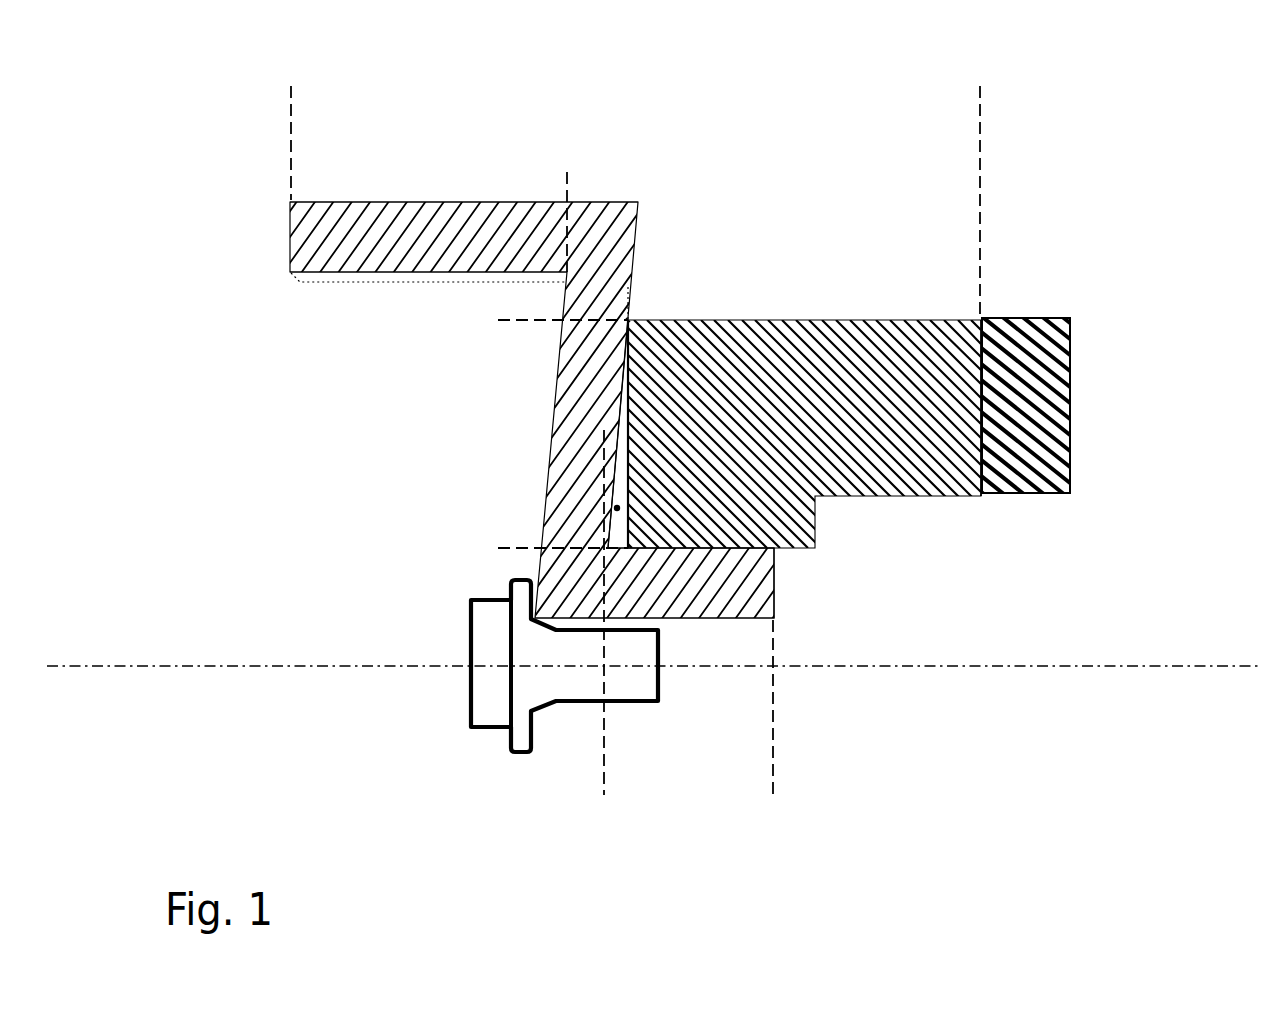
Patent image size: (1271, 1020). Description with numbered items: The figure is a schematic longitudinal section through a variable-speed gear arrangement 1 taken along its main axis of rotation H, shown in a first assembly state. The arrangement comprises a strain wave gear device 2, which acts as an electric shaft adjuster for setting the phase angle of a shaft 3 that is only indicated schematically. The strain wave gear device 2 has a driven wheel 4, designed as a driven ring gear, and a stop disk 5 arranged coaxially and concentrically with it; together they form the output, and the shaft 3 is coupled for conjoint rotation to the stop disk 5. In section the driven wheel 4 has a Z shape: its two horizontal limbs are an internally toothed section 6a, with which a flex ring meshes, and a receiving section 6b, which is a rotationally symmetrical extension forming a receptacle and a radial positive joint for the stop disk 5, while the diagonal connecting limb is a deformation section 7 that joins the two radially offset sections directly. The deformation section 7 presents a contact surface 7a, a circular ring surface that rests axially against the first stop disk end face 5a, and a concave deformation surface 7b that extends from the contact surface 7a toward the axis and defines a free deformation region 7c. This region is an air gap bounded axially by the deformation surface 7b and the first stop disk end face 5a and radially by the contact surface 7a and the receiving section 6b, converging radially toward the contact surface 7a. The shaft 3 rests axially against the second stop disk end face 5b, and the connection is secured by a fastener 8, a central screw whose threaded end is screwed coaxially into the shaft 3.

The variable-speed gear arrangement 1 is at (1105, 117).
The strain wave gear device 2 is at (980, 86).
The shaft 3 is at (1043, 318).
The driven wheel 4 is at (689, 178).
The stop disk 5 is at (795, 320).
The first stop disk end face 5a is at (628, 410).
The second stop disk end face 5b is at (980, 383).
The internally toothed section 6a is at (567, 172).
The receiving section 6b is at (773, 787).
The deformation section 7 is at (498, 320).
The contact surface 7a is at (628, 320).
The deformation surface 7b is at (612, 435).
The free deformation region 7c is at (617, 508).
The fastener 8 is at (471, 655).
The main axis of rotation H is at (1155, 666).